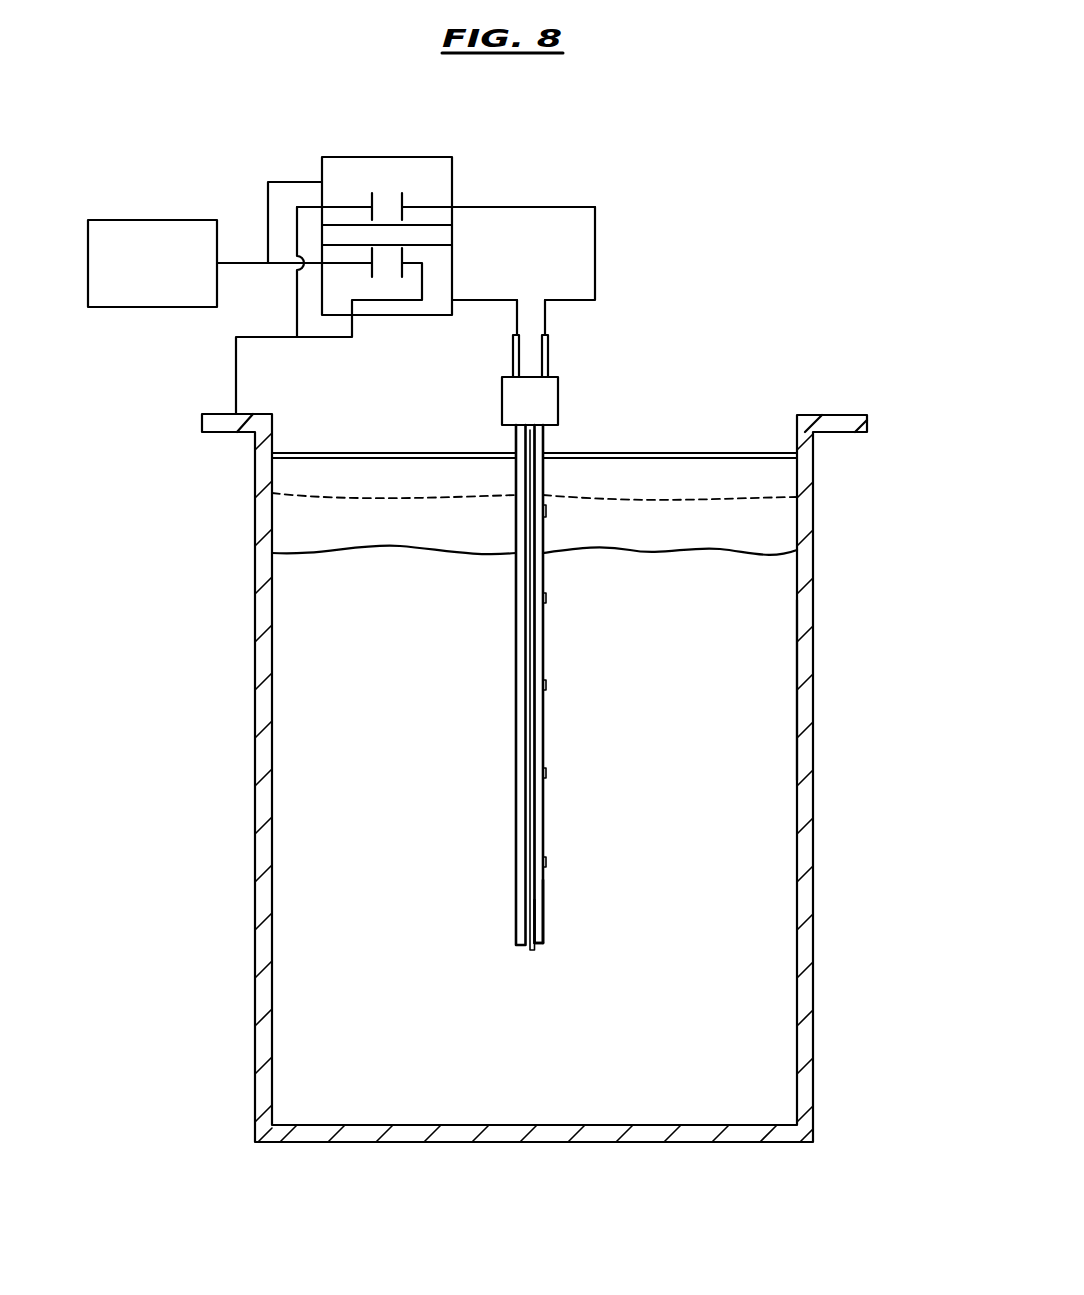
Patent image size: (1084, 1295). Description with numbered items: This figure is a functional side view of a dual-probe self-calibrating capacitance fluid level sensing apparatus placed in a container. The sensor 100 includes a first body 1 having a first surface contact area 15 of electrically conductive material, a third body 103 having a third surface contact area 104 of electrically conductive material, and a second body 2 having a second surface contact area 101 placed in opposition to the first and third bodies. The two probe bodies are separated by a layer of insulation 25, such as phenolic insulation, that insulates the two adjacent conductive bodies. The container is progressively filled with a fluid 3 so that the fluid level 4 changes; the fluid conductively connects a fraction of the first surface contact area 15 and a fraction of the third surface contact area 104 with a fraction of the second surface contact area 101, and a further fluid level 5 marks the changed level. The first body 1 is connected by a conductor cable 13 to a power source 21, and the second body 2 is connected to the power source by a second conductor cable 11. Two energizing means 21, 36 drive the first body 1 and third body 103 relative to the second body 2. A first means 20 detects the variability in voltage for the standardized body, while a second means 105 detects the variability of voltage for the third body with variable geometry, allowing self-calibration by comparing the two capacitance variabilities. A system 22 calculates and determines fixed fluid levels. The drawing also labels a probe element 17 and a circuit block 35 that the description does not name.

The first body 1 is at (535, 696).
The second body 2 is at (813, 783).
The fluid 3 is at (725, 1004).
The fluid level 4 is at (798, 548).
The fluid level 5 is at (722, 495).
The second conductor cable 11 is at (236, 357).
The conductor cable 13 is at (482, 302).
The first surface contact area 15 is at (516, 682).
The outer tube 17 is at (543, 637).
The first means for detecting variability in voltage 20 is at (452, 247).
The power source 21 is at (383, 262).
The system for calculation and determination of fixed fluid levels 22 is at (158, 220).
The layer of insulation 25 is at (530, 952).
The measuring circuit 35 is at (597, 273).
The second means for energizing 36 is at (388, 203).
The sensor 100 is at (738, 322).
The second surface contact area 101 is at (797, 687).
The third body 103 is at (544, 893).
The third surface contact area 104 is at (544, 913).
The second means for detecting variability of voltage 105 is at (453, 182).